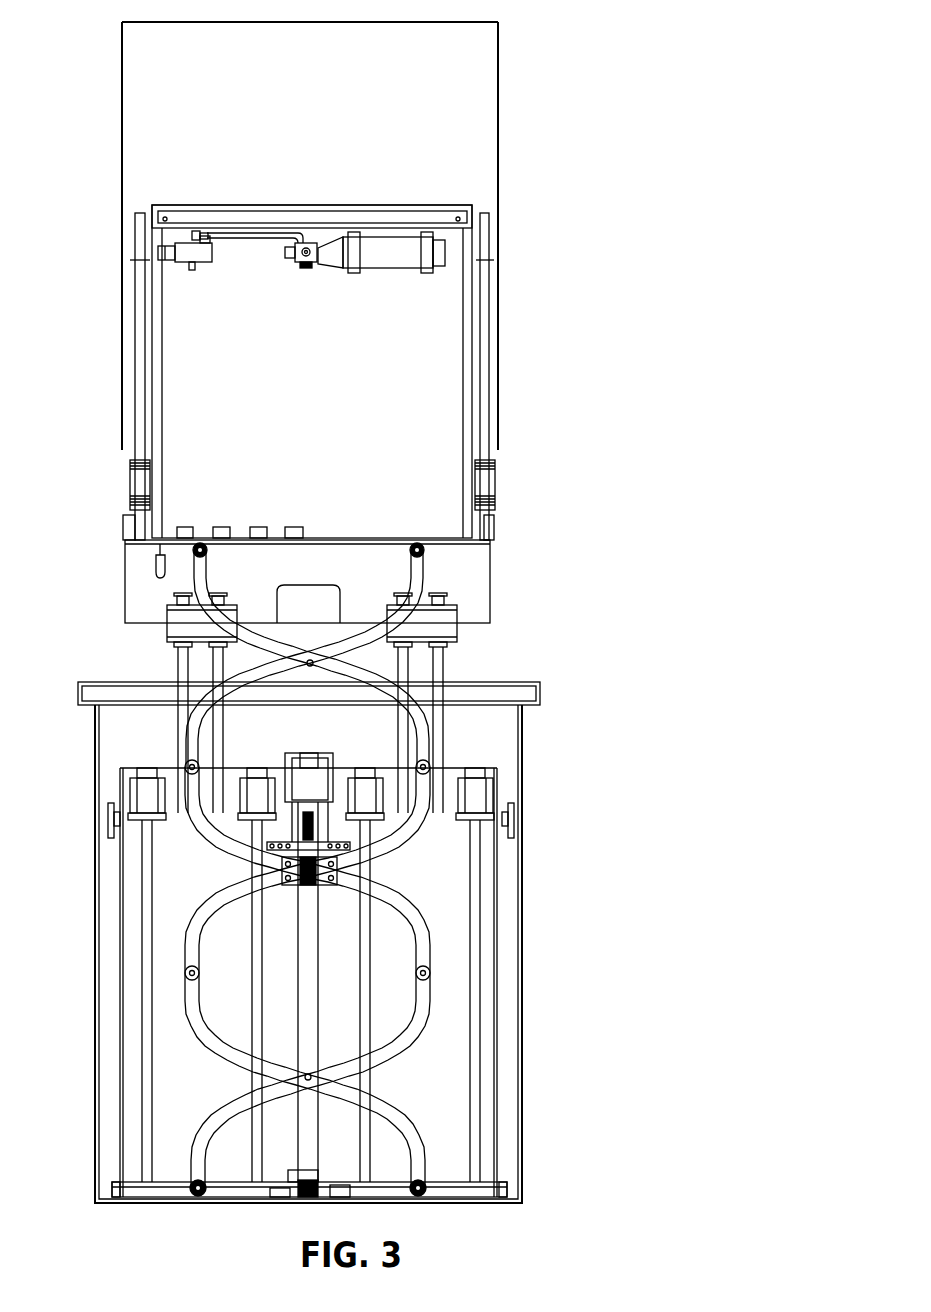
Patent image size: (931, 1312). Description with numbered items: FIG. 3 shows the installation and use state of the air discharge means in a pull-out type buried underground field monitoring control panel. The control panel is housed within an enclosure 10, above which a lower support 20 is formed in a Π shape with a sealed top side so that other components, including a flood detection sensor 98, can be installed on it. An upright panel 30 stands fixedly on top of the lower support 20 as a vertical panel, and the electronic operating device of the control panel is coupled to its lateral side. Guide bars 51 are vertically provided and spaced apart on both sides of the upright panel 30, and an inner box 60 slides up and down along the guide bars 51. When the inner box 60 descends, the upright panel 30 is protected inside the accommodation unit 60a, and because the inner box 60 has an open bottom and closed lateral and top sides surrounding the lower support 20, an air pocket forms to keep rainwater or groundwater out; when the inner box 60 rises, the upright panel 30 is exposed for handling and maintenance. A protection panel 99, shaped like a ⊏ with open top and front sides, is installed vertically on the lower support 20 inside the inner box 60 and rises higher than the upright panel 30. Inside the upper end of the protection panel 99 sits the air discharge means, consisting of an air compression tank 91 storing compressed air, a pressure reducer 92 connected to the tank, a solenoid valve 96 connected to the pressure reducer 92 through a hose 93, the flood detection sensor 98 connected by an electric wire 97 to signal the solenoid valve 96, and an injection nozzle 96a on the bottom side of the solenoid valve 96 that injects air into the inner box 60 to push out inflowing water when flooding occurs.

The enclosure 10 is at (522, 745).
The lower support 20 is at (494, 603).
The upright panel 30 is at (443, 220).
The guide bars 51 is at (483, 301).
The inner box 60 is at (498, 72).
The accommodation unit 60a is at (337, 77).
The air compression tank 91 is at (390, 248).
The pressure reducer 92 is at (312, 243).
The hose 93 is at (253, 235).
The solenoid valve 96 is at (205, 253).
The injection nozzle 96a is at (193, 265).
The electric wire 97 is at (163, 393).
The flood detection sensor 98 is at (157, 562).
The protection panel 99 is at (148, 212).